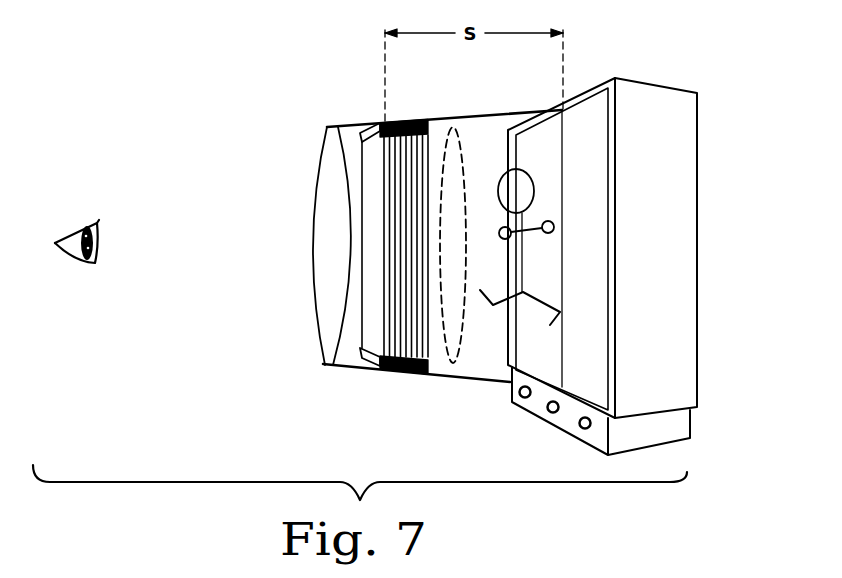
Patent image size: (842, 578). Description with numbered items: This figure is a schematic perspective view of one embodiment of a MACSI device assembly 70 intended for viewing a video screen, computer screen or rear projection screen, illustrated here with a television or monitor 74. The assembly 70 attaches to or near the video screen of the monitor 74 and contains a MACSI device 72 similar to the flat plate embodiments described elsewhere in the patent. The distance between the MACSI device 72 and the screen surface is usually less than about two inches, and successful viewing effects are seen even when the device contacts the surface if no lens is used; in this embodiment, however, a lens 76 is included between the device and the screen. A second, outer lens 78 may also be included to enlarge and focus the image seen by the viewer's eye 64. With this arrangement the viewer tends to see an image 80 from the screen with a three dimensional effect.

The viewer's eye 64 is at (60, 253).
The device assembly 70 is at (332, 390).
The MACSI device 72 is at (434, 362).
The television or monitor 74 is at (697, 300).
The lens 76 is at (464, 328).
The outer lens 78 is at (313, 280).
The image 80 is at (532, 180).